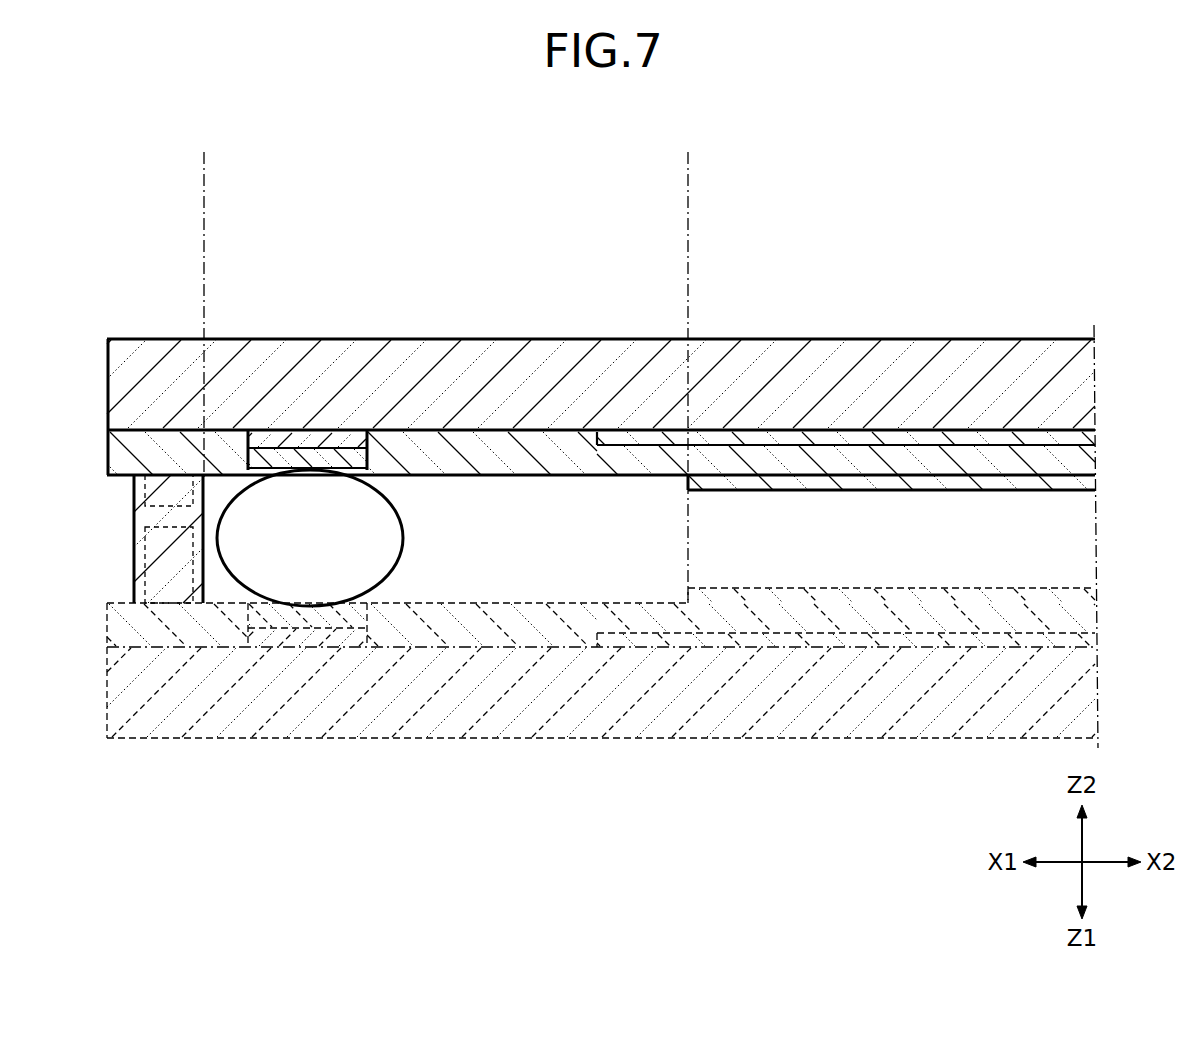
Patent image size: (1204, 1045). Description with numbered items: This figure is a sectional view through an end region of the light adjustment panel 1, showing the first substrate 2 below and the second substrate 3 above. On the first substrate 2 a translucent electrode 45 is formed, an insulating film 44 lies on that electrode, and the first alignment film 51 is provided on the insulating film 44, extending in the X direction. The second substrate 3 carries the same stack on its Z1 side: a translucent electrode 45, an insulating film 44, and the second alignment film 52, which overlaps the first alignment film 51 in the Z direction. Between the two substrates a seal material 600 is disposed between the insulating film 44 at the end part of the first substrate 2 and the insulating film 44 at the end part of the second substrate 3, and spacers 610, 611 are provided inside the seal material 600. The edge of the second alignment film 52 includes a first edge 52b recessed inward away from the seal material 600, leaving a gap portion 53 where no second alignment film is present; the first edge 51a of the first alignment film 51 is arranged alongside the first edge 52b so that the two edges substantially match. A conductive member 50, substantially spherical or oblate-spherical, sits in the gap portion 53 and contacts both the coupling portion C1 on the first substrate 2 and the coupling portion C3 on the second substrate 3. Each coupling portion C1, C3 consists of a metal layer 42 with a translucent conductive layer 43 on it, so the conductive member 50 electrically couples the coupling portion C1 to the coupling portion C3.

The light adjustment panel 1 is at (934, 257).
The first substrate 2 is at (1080, 690).
The second substrate 3 is at (1078, 385).
The metal layer 42 is at (262, 440).
The conductive layer 43 is at (318, 458).
The insulating film 44 is at (1078, 458).
The translucent electrode 45 is at (1078, 438).
The conductive member 50 is at (403, 538).
The first alignment film 51 is at (1088, 597).
The first edge 51a is at (688, 590).
The second alignment film 52 is at (1082, 483).
The first edge 52b is at (605, 496).
The gap portion 53 is at (688, 179).
The seal material 600 is at (115, 539).
The spacer 610 is at (133, 578).
The spacer 611 is at (133, 490).
The coupling portion C1 is at (360, 790).
The coupling portion C3 is at (306, 514).